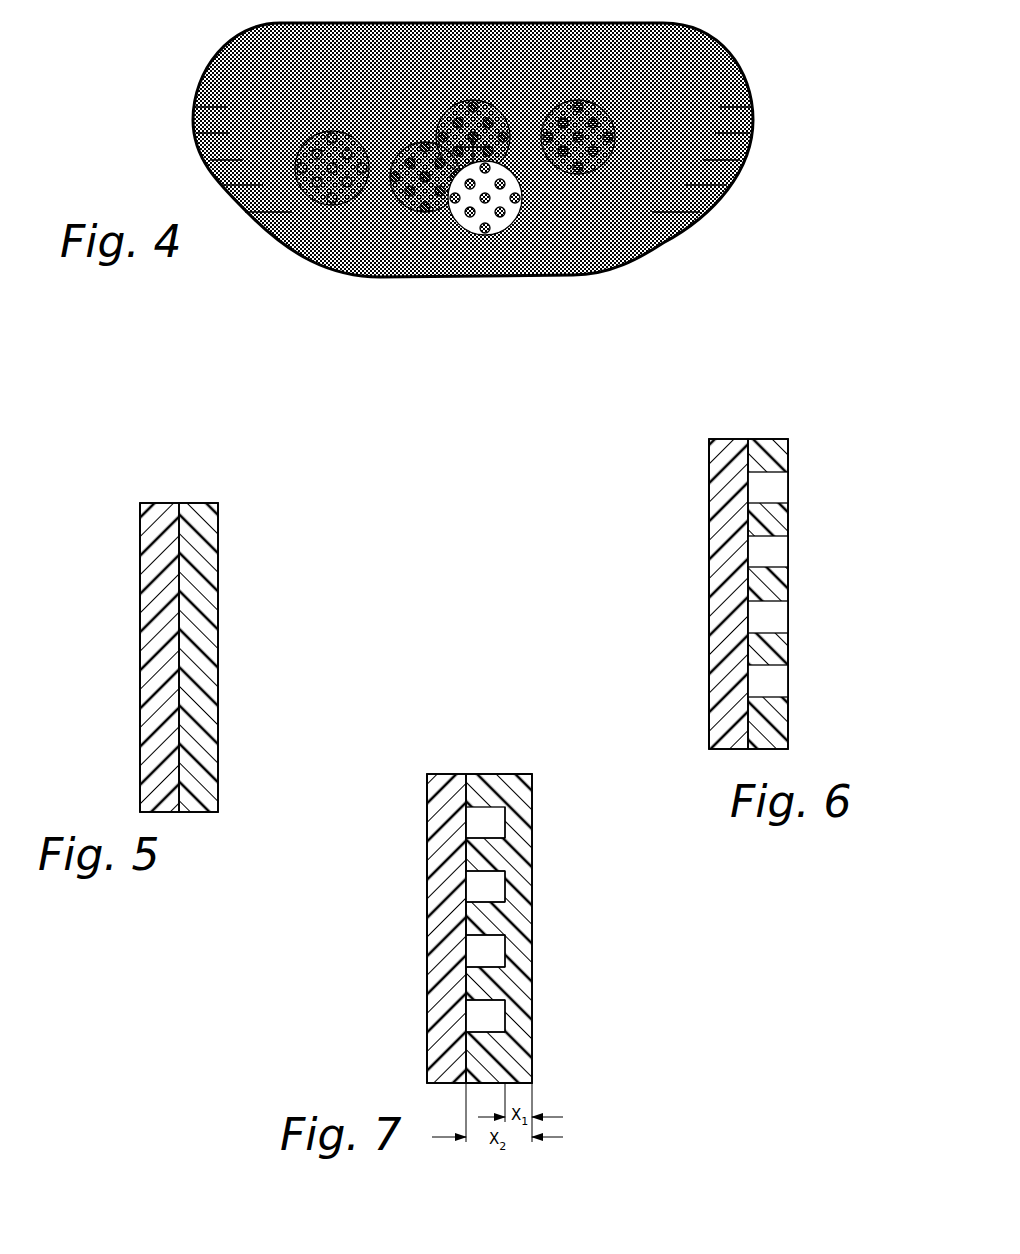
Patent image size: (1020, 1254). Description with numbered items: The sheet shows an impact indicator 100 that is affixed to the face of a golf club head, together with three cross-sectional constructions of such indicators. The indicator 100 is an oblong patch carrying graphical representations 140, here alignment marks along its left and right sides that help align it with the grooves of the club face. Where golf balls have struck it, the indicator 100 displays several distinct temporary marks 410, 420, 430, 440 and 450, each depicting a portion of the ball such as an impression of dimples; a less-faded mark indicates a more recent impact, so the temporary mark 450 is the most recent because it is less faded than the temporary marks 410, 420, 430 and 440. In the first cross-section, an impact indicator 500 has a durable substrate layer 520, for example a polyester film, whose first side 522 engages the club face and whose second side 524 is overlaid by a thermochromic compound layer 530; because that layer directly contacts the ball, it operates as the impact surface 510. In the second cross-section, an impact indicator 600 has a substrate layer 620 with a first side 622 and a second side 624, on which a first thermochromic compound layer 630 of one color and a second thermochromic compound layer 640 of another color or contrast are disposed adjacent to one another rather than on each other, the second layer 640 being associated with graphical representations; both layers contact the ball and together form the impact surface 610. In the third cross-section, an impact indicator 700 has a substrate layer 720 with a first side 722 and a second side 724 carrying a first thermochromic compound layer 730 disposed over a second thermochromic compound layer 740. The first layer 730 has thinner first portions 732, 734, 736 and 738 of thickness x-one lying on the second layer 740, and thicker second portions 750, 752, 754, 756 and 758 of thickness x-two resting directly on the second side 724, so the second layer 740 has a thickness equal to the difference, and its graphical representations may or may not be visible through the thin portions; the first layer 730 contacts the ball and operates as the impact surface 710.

In FIG. 4, the impact indicator 100 is at (182, 112).
In FIG. 4, the graphical representation 140 is at (234, 124).
In FIG. 4, the temporary mark 410 is at (418, 128).
In FIG. 4, the temporary mark 420 is at (310, 213).
In FIG. 4, the temporary mark 430 is at (505, 100).
In FIG. 4, the temporary mark 440 is at (612, 100).
In FIG. 4, the temporary mark 450 is at (535, 212).
In FIG. 5, the impact indicator 500 is at (126, 483).
In FIG. 5, the impact surface 510 is at (223, 631).
In FIG. 5, the substrate layer 520 is at (156, 530).
In FIG. 5, the first side 522 is at (138, 577).
In FIG. 5, the second side 524 is at (183, 510).
In FIG. 5, the thermochromic compound layer 530 is at (205, 555).
In FIG. 6, the impact indicator 600 is at (695, 418).
In FIG. 6, the impact surface 610 is at (800, 575).
In FIG. 6, the substrate layer 620 is at (720, 462).
In FIG. 6, the first side 622 is at (710, 512).
In FIG. 6, the second side 624 is at (752, 448).
In FIG. 6, the first thermochromic compound layer 630 is at (790, 730).
In FIG. 6, the second thermochromic compound layer 640 is at (790, 677).
In FIG. 7, the impact indicator 700 is at (448, 755).
In FIG. 7, the impact surface 710 is at (567, 962).
In FIG. 7, the substrate layer 720 is at (438, 797).
In FIG. 7, the first side 722 is at (427, 850).
In FIG. 7, the second side 724 is at (470, 787).
In FIG. 7, the first thermochromic compound layer 730 is at (522, 1083).
In FIG. 7, the first portion 732 is at (515, 822).
In FIG. 7, the first portion 734 is at (513, 885).
In FIG. 7, the first portion 736 is at (513, 952).
In FIG. 7, the first portion 738 is at (513, 1017).
In FIG. 7, the second thermochromic compound layer 740 is at (493, 803).
In FIG. 7, the second portion 750 is at (515, 790).
In FIG. 7, the second portion 752 is at (513, 857).
In FIG. 7, the second portion 754 is at (515, 922).
In FIG. 7, the second portion 756 is at (515, 983).
In FIG. 7, the second portion 758 is at (515, 1058).